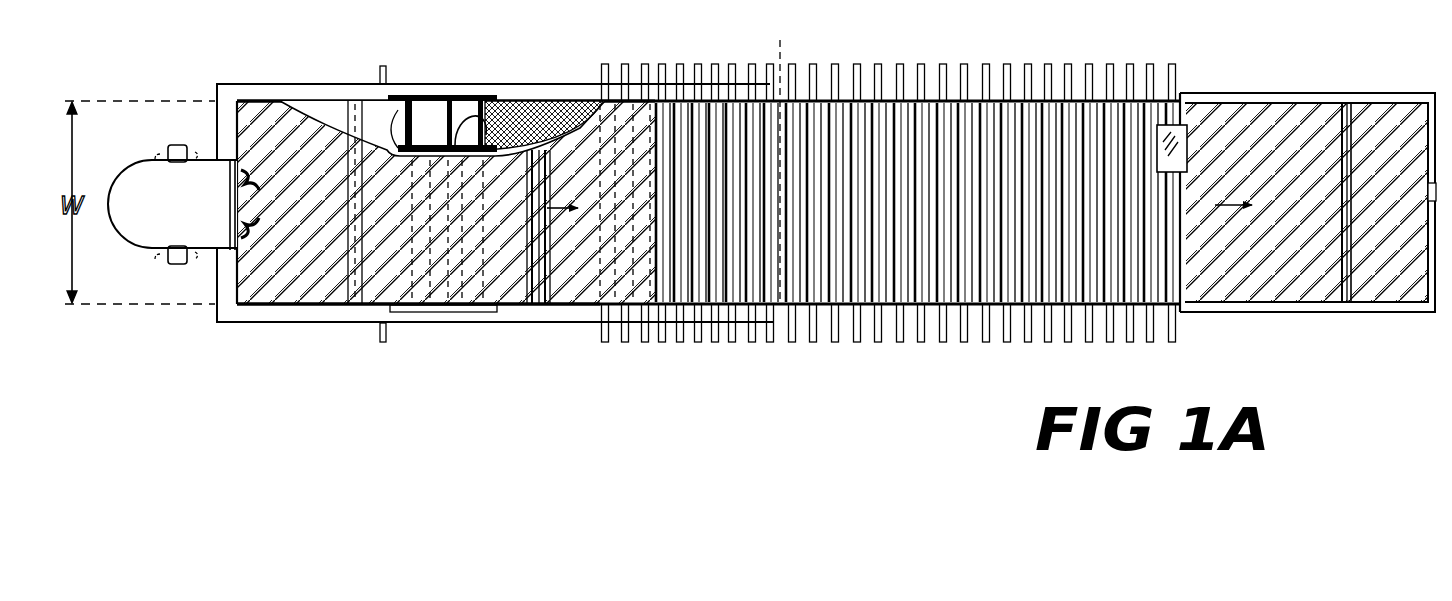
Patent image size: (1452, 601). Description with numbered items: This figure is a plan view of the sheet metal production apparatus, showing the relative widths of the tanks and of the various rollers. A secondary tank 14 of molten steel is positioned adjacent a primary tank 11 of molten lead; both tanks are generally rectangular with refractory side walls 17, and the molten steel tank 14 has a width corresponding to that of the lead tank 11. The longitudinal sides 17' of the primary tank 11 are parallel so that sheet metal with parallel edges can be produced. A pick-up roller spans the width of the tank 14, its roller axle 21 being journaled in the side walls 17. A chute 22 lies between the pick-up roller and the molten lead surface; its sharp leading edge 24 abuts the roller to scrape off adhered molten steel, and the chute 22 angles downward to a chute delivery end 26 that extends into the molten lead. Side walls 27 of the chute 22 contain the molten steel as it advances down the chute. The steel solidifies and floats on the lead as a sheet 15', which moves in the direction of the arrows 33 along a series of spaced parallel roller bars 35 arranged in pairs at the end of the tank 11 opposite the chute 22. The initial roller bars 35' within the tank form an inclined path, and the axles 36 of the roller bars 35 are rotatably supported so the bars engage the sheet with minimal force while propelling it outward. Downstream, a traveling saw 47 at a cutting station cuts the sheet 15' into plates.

The primary tank 11 is at (523, 335).
The secondary tank 14 is at (333, 330).
The solidified sheet of steel 15' is at (1308, 230).
The side walls 17 is at (477, 190).
The longitudinal sides 17' is at (446, 215).
The roller axle 21 is at (382, 96).
The chute 22 is at (500, 100).
The leading edge 24 is at (386, 72).
The chute delivery end 26 is at (490, 130).
The side walls 27 is at (462, 100).
The arrows 33 is at (1233, 205).
The roller bars 35 is at (982, 189).
The initial roller bars 35' is at (688, 201).
The axles 36 is at (1007, 64).
The traveling saw 47 is at (1188, 132).